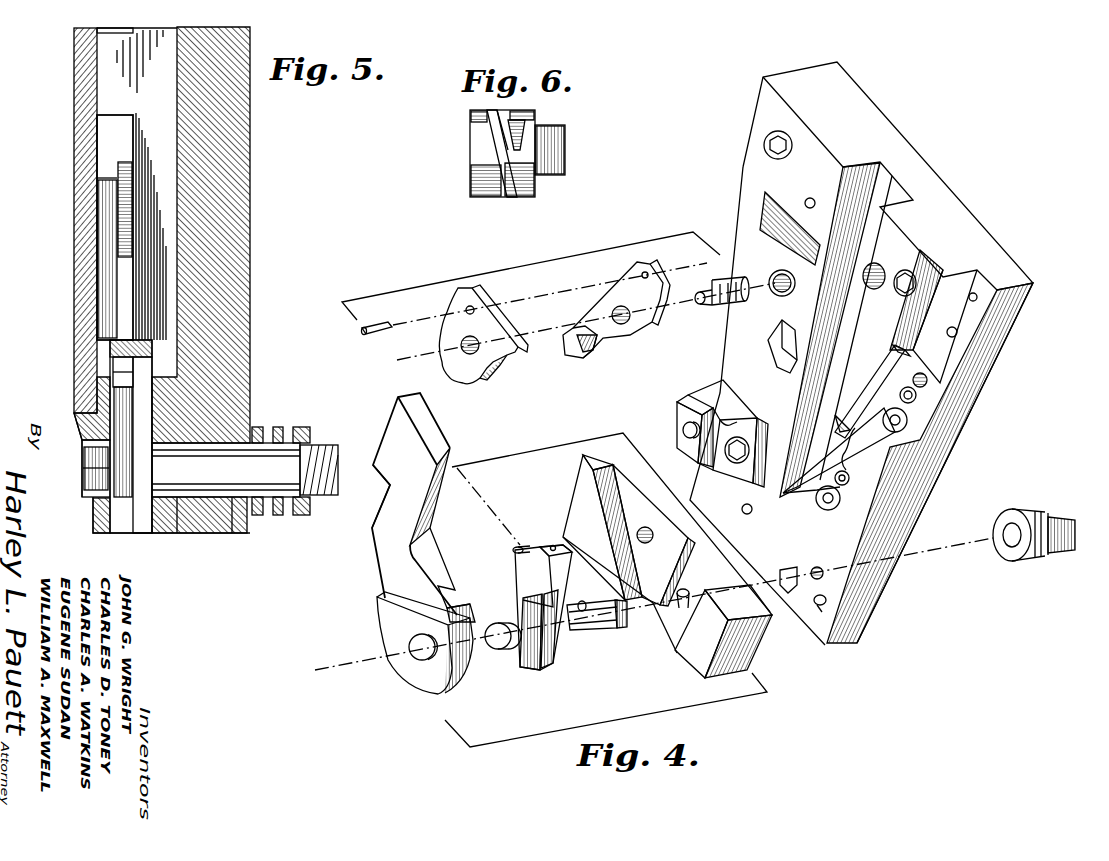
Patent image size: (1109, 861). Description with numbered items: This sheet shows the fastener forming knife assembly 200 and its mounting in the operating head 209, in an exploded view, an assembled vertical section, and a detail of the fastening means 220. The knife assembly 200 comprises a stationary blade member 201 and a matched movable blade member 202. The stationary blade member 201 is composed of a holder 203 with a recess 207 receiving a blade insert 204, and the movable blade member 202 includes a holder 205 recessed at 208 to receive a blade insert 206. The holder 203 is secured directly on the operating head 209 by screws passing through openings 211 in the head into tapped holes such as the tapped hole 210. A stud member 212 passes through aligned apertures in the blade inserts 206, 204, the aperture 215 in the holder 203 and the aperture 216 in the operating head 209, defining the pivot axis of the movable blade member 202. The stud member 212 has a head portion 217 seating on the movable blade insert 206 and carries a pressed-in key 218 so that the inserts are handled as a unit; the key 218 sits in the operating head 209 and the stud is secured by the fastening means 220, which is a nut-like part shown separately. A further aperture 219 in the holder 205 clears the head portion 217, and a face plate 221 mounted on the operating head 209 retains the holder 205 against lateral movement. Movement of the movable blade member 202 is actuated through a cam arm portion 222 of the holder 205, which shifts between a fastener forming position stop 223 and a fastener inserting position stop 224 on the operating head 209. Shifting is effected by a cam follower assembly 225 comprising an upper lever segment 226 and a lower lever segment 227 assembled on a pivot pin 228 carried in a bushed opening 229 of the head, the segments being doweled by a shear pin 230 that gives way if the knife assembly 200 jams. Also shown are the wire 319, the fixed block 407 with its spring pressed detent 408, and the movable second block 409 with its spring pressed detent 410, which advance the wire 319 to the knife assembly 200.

In FIG. 5, the fastener forming knife assembly 200 is at (93, 518).
In FIG. 4, the fastener forming knife assembly 200 is at (650, 716).
In FIG. 4, the stationary blade member 201 is at (537, 455).
In FIG. 5, the movable blade member 202 is at (93, 509).
In FIG. 4, the movable blade member 202 is at (369, 523).
In FIG. 5, the holder 203 is at (180, 533).
In FIG. 4, the holder 203 is at (690, 660).
In FIG. 5, the blade insert 204 is at (142, 533).
In FIG. 4, the blade insert 204 is at (560, 660).
In FIG. 5, the holder 205 is at (77, 412).
In FIG. 4, the holder 205 is at (428, 686).
In FIG. 5, the blade insert 206 is at (118, 533).
In FIG. 4, the blade insert 206 is at (547, 647).
In FIG. 4, the recess 207 is at (663, 608).
In FIG. 4, the recess 208 is at (440, 585).
In FIG. 5, the operating head 209 is at (238, 235).
In FIG. 4, the operating head 209 is at (883, 592).
In FIG. 4, the tapped hole 210 is at (647, 544).
In FIG. 4, the opening 211 is at (742, 510).
In FIG. 5, the stud member 212 is at (258, 515).
In FIG. 4, the stud member 212 is at (592, 600).
In FIG. 4, the aperture 215 is at (686, 589).
In FIG. 4, the aperture 216 is at (790, 563).
In FIG. 5, the head portion 217 is at (96, 471).
In FIG. 4, the head portion 217 is at (495, 650).
In FIG. 5, the key 218 is at (232, 533).
In FIG. 4, the key 218 is at (590, 632).
In FIG. 5, the aperture 219 is at (92, 452).
In FIG. 4, the aperture 219 is at (410, 661).
In FIG. 5, the fastening means 220 is at (298, 515).
In FIG. 6, the fastening means 220 is at (526, 204).
In FIG. 4, the fastening means 220 is at (1050, 560).
In FIG. 5, the face plate 221 is at (77, 273).
In FIG. 5, the cam arm portion 222 is at (103, 210).
In FIG. 4, the cam arm portion 222 is at (396, 438).
In FIG. 5, the fastener forming position stop 223 is at (103, 82).
In FIG. 4, the fastener forming position stop 223 is at (777, 348).
In FIG. 4, the fastener inserting position stop 224 is at (713, 466).
In FIG. 4, the cam follower assembly 225 is at (487, 272).
In FIG. 4, the upper lever segment 226 is at (467, 380).
In FIG. 4, the lower lever segment 227 is at (623, 335).
In FIG. 4, the pivot pin 228 is at (711, 310).
In FIG. 4, the bushed opening 229 is at (775, 296).
In FIG. 4, the shear pin 230 is at (378, 333).
In FIG. 4, the wire 319 is at (800, 500).
In FIG. 4, the fixed block 407 is at (871, 386).
In FIG. 4, the spring pressed detent 408 is at (856, 415).
In FIG. 4, the second block 409 is at (818, 452).
In FIG. 4, the spring pressed detent 410 is at (805, 518).